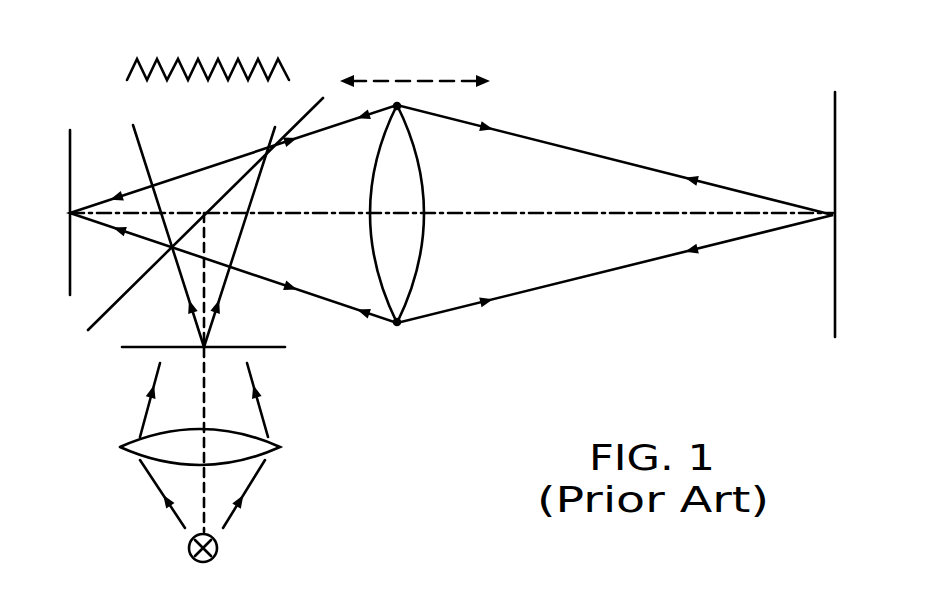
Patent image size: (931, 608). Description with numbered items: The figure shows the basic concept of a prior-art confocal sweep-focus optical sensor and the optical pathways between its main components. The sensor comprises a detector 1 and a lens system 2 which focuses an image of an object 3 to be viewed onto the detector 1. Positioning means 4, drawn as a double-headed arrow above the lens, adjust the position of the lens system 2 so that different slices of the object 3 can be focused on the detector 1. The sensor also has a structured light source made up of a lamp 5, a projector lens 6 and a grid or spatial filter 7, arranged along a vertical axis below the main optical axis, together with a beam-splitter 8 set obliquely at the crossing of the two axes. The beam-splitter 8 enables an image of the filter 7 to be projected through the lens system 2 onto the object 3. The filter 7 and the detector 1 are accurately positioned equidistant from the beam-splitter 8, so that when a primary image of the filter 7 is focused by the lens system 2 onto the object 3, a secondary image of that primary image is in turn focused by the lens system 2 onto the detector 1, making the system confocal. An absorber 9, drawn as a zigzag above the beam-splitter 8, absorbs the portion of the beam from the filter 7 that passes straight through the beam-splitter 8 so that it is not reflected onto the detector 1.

The detector 1 is at (70, 172).
The lens system 2 is at (403, 303).
The object 3 is at (835, 172).
The positioning means 4 is at (408, 81).
The lamp 5 is at (188, 552).
The projector lens 6 is at (135, 447).
The grid or spatial filter 7 is at (140, 351).
The beam-splitter 8 is at (92, 320).
The absorber 9 is at (212, 65).